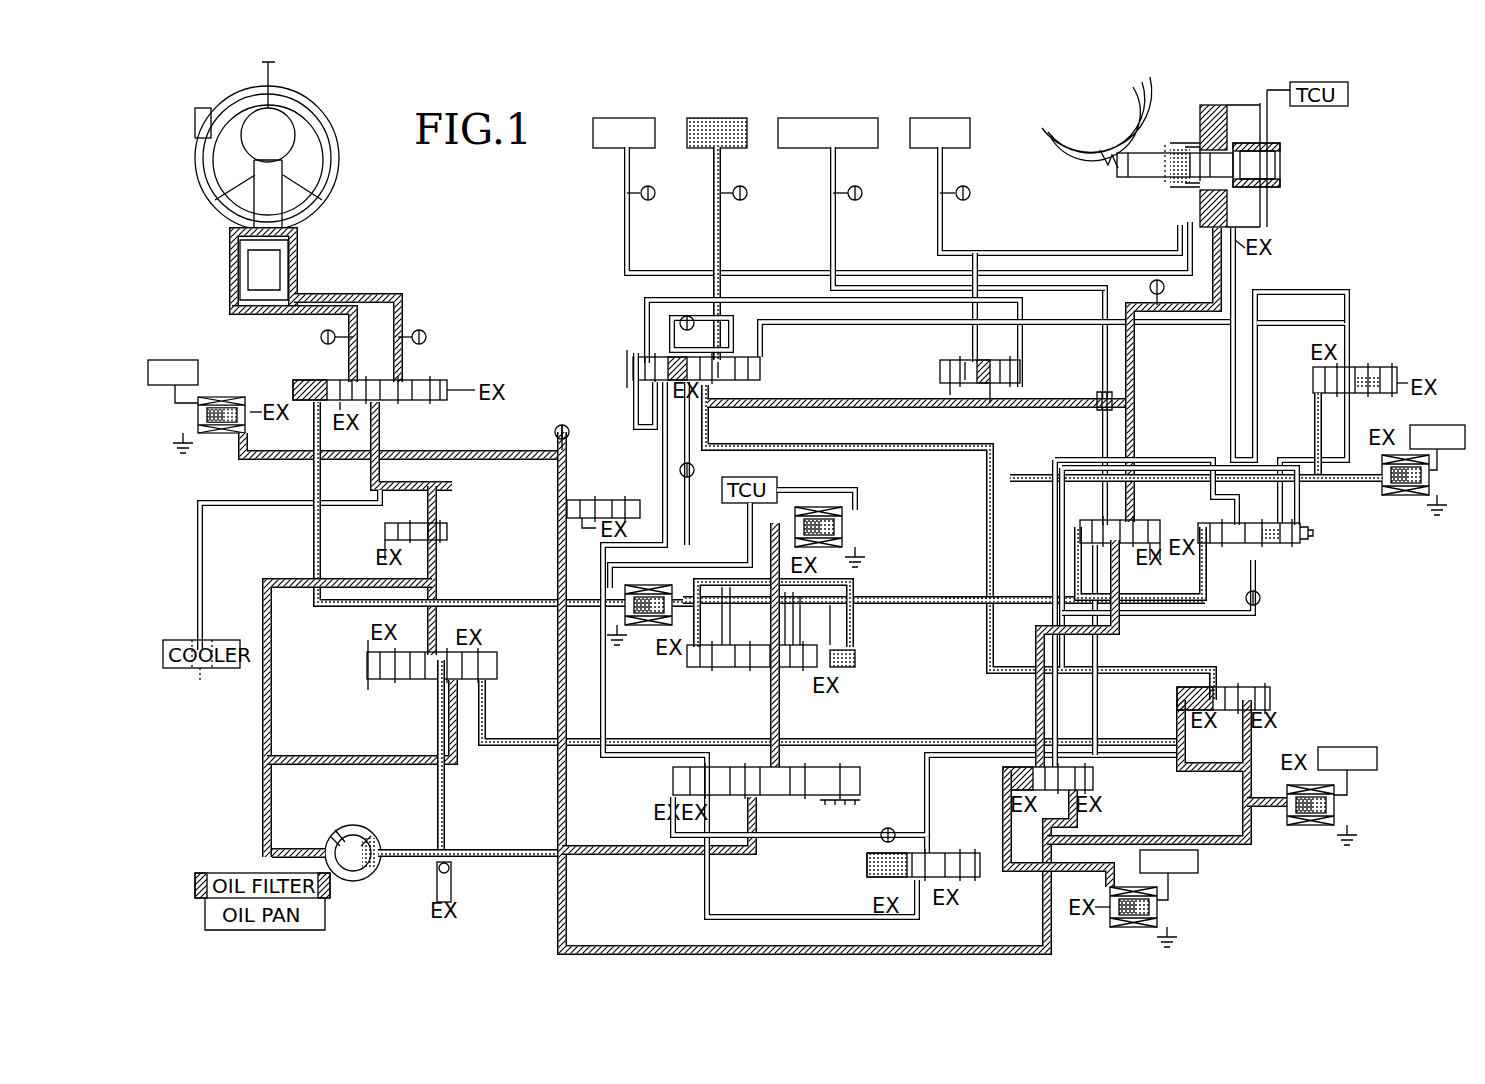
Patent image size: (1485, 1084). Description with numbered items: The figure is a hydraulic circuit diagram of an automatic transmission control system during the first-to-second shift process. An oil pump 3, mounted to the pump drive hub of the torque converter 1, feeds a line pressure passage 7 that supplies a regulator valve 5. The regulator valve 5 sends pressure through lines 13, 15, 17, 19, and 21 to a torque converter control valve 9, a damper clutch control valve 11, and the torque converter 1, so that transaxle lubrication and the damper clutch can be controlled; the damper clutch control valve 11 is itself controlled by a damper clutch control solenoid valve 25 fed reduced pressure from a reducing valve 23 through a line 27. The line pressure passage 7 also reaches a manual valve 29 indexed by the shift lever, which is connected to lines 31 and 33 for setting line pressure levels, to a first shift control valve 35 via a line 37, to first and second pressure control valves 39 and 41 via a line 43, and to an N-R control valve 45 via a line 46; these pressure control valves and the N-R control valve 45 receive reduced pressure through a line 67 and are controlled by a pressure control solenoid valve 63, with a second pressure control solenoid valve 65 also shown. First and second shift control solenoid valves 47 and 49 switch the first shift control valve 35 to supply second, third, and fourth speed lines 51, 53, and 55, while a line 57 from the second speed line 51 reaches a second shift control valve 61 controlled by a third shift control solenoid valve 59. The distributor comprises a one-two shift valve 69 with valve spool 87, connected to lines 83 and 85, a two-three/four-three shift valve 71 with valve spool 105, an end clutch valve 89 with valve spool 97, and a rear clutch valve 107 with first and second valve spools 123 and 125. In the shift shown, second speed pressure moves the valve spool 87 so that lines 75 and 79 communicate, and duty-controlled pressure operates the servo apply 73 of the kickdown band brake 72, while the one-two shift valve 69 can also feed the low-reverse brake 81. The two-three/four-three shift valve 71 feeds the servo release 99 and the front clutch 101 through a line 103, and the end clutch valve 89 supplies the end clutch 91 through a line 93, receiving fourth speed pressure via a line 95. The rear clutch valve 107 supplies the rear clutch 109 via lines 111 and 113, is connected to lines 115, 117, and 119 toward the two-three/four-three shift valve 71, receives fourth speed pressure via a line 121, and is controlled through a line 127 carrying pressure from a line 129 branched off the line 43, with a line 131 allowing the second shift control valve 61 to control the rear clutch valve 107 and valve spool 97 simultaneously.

The torque converter 1 is at (200, 206).
The oil pump 3 is at (355, 882).
The regulator valve 5 is at (398, 692).
The line pressure passage 7 is at (448, 812).
The torque converter control valve 9 is at (452, 526).
The damper clutch control valve 11 is at (442, 362).
The line 13 is at (426, 610).
The line 15 is at (368, 478).
The line 17 is at (285, 312).
The line 19 is at (352, 296).
The line 21 is at (196, 557).
The reducing valve 23 is at (592, 480).
The damper clutch control solenoid valve 25 is at (218, 443).
The line 27 is at (488, 448).
The manual valve 29 is at (868, 781).
The line 31 is at (635, 740).
The line 33 is at (500, 745).
The first shift control valve 35 is at (705, 674).
The line 37 is at (770, 690).
The first pressure control valve 39 is at (1100, 778).
The second pressure control valve 41 is at (1275, 696).
The line 43 is at (912, 740).
The N-R control valve 45 is at (865, 864).
The line 46 is at (705, 837).
The first shift control solenoid valve 47 is at (850, 528).
The second shift control solenoid valve 49 is at (637, 645).
The second speed pressure line 51 is at (885, 596).
The third speed line 53 is at (953, 606).
The fourth speed line 55 is at (856, 662).
The line 57 is at (1345, 482).
The third shift control solenoid valve 59 is at (1410, 500).
The second shift control valve 61 is at (1360, 360).
The pressure control solenoid valve 63 is at (1175, 907).
The second pressure control solenoid valve 65 is at (1348, 805).
The line 67 is at (625, 946).
The 1-2 shift valve 69 is at (1160, 516).
The 2-3/4-3 shift valve 71 is at (935, 368).
The kickdown band brake 72 is at (1105, 190).
The servo apply 73 is at (1215, 110).
The line 75 is at (1120, 638).
The line 79 is at (1135, 405).
The low-reverse brake 81 is at (830, 115).
The line 83 is at (1098, 712).
The line 85 is at (1085, 292).
The valve spool 87 is at (1128, 518).
The end clutch valve 89 is at (1315, 536).
The end clutch 91 is at (940, 115).
The line 93 is at (1240, 272).
The line 95 is at (1210, 447).
The valve spool 97 is at (1262, 545).
The servo release 99 is at (1175, 202).
The front clutch 101 is at (625, 115).
The line 103 is at (978, 253).
The valve spool 105 is at (965, 366).
The rear clutch valve 107 is at (622, 360).
The rear clutch 109 is at (718, 115).
The line 111 is at (812, 452).
The line 113 is at (712, 290).
The line 115 is at (600, 602).
The line 117 is at (820, 398).
The line 119 is at (780, 305).
The line 121 is at (634, 413).
The first valve spool 123 is at (665, 355).
The second valve spool 125 is at (728, 375).
The line 127 is at (783, 326).
The line 129 is at (1330, 410).
The line 131 is at (1290, 380).